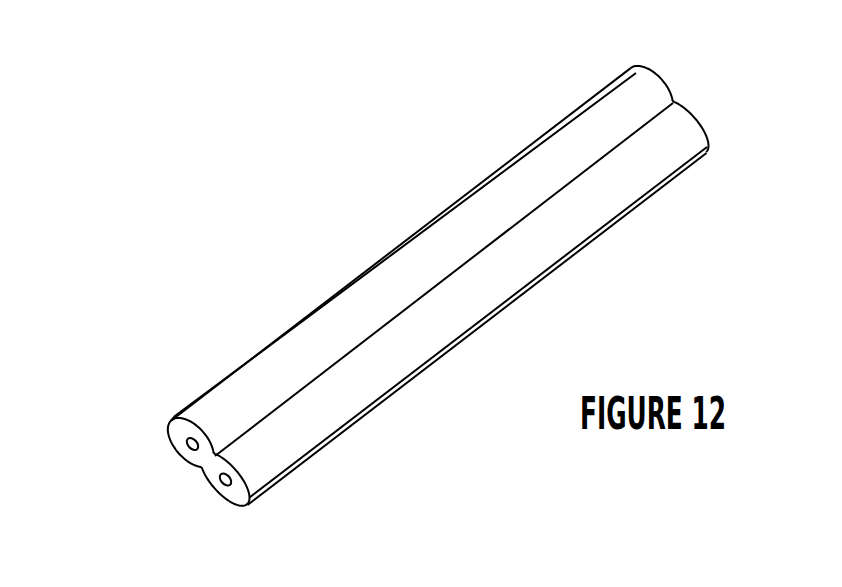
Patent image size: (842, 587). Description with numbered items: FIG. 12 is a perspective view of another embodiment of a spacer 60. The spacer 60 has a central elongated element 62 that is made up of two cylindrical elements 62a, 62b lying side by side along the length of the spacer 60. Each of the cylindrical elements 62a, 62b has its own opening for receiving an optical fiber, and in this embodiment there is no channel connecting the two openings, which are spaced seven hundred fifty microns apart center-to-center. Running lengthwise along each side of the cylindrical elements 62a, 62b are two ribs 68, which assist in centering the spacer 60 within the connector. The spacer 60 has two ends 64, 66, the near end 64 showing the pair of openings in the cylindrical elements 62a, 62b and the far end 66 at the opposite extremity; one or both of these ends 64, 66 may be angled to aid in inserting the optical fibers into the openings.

The spacer 60 is at (694, 206).
The central elongated element 62 is at (441, 322).
The cylindrical element 62a is at (311, 436).
The cylindrical element 62b is at (273, 378).
The end 64 is at (236, 498).
The end 66 is at (705, 133).
The rib 68 is at (476, 190).